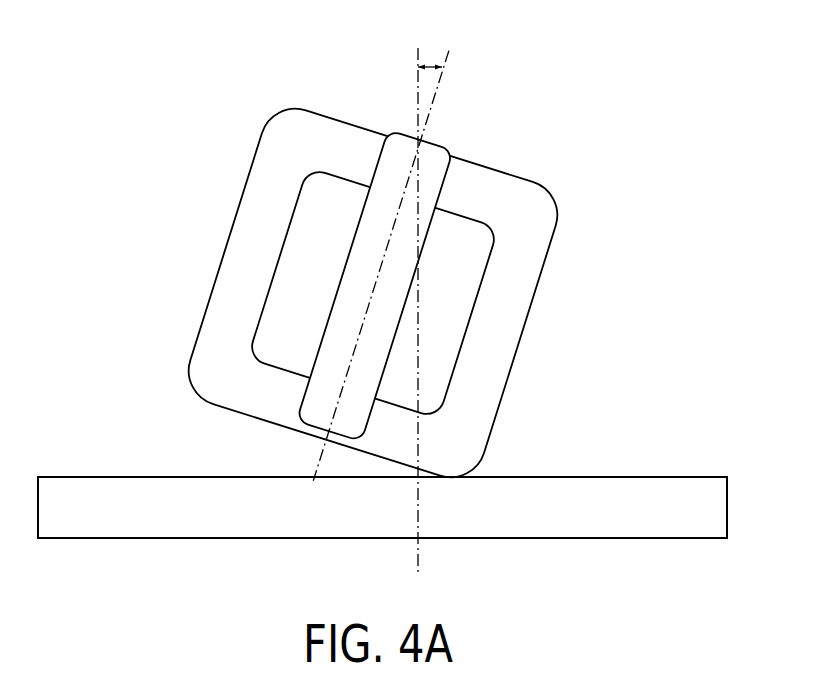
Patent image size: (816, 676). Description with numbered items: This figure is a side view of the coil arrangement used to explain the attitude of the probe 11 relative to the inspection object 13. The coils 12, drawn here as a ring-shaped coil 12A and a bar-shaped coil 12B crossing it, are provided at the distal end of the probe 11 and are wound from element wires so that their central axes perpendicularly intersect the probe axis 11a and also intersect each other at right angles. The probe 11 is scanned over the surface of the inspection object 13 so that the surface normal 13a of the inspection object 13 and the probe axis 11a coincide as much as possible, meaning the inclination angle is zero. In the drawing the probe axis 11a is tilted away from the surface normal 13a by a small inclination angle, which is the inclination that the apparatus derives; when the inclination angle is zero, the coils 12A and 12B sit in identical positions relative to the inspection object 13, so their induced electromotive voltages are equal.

The probe 11 is at (441, 265).
The probe axis 11a is at (435, 87).
The coil 12 is at (441, 290).
The coil 12A is at (373, 293).
The coil 12B is at (374, 285).
The inspection object 13 is at (629, 487).
The surface normal 13a is at (418, 84).